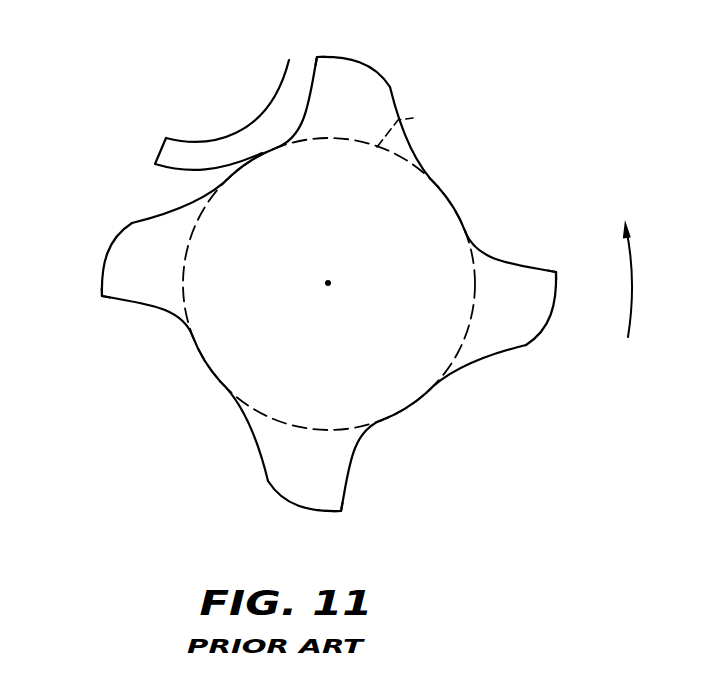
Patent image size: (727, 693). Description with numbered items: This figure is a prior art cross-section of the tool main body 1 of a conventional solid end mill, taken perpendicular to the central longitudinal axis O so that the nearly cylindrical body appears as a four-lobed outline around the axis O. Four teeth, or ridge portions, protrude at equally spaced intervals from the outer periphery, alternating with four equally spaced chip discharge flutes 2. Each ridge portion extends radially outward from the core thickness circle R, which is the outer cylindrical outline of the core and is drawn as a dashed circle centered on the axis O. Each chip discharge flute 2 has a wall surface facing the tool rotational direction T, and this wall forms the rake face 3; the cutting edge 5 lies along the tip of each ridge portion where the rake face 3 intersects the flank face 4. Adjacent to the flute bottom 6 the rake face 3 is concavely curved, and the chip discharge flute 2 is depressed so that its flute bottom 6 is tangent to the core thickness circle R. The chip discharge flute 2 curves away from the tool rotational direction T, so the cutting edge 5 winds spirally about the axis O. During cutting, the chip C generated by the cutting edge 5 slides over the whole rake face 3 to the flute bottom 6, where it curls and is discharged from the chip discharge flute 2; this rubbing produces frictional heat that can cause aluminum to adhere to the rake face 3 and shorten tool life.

The tool main body 1 is at (425, 41).
The chip discharge flute 2 is at (224, 114).
The rake face 3 is at (313, 83).
The flank face 4 is at (349, 58).
The cutting edge 5 is at (317, 56).
The flute bottom 6 is at (262, 153).
The chip C is at (160, 164).
The core thickness circle R is at (406, 124).
The central longitudinal axis O is at (332, 282).
The tool rotational direction T is at (638, 278).